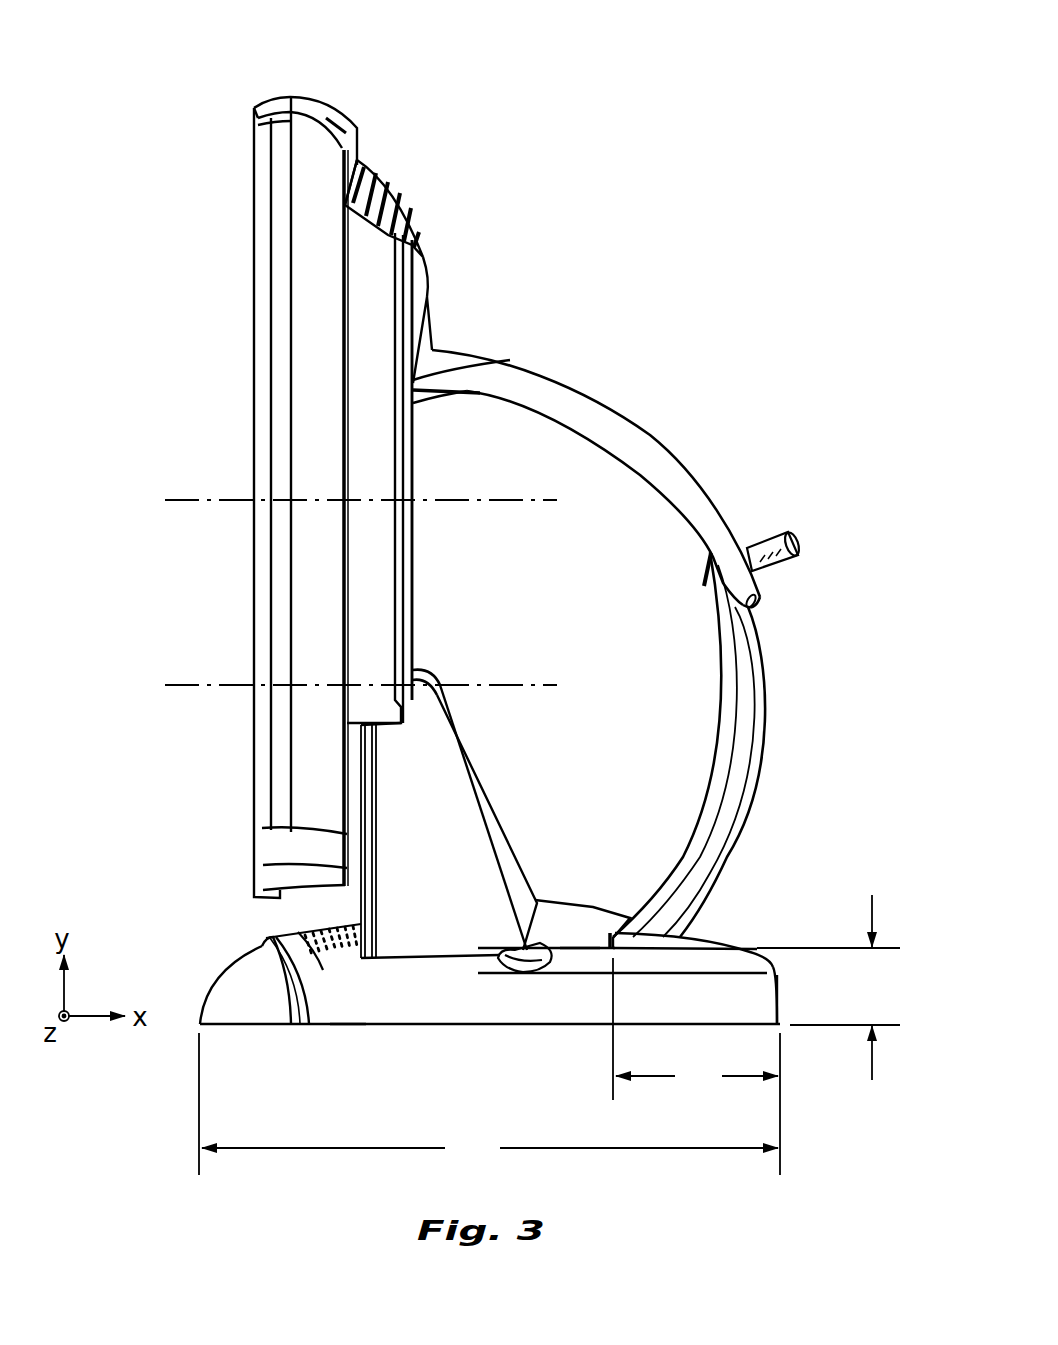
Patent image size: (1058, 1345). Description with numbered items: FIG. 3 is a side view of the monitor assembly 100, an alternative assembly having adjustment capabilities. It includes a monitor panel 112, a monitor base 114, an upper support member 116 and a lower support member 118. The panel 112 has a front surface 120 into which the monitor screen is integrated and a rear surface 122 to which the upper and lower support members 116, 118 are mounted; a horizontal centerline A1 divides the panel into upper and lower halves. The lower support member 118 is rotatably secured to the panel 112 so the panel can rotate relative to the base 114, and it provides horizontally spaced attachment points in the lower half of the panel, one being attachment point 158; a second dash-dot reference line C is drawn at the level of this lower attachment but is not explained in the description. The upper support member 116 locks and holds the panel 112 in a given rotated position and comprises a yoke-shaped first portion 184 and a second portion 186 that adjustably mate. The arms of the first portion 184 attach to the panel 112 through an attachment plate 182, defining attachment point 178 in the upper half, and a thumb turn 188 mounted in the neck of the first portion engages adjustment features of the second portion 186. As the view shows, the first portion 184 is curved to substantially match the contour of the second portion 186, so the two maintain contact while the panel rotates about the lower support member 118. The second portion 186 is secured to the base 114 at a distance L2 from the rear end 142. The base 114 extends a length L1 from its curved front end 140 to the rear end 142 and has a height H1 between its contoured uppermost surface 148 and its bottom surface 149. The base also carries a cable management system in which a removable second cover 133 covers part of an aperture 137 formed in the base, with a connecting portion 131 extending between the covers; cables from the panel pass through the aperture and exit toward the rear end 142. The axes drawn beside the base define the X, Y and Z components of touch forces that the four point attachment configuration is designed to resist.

The monitor assembly 100 is at (185, 66).
The monitor panel 112 is at (310, 250).
The front surface 120 is at (258, 375).
The rear surface 122 is at (413, 275).
The attachment plate 182 is at (413, 335).
The attachment point 178 is at (498, 363).
The first portion 184 is at (593, 412).
The upper support member 116 is at (722, 465).
The thumb turn 188 is at (762, 540).
The second portion 186 is at (745, 768).
The attachment point 158 is at (440, 666).
The lower support member 118 is at (470, 824).
The connecting portion 131 is at (576, 927).
The uppermost surface 148 is at (712, 940).
The aperture 137 is at (500, 960).
The monitor base 114 is at (300, 933).
The front end 140 is at (228, 976).
The bottom surface 149 is at (348, 1027).
The second cover 133 is at (590, 958).
The rear end 142 is at (778, 1020).
The horizontal centerline A1 is at (182, 498).
The lower pivot axis C is at (182, 684).
The length L1 is at (489, 1104).
The distance L2 is at (695, 1029).
The height H1 is at (828, 972).